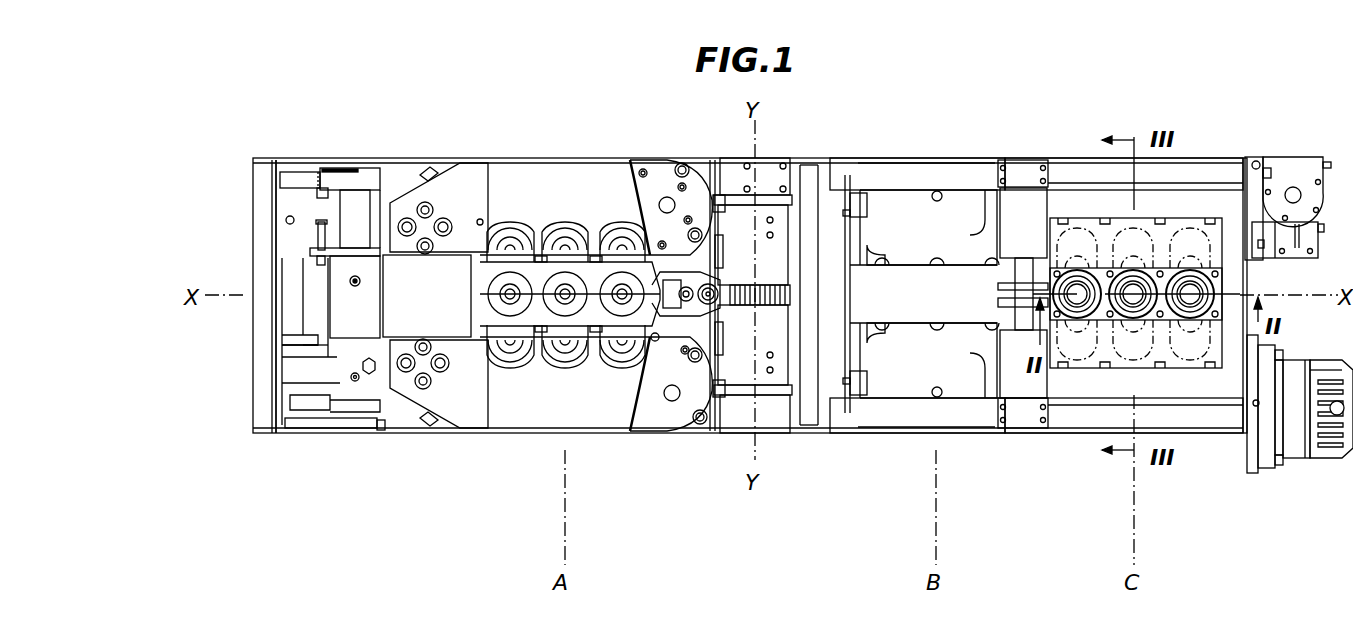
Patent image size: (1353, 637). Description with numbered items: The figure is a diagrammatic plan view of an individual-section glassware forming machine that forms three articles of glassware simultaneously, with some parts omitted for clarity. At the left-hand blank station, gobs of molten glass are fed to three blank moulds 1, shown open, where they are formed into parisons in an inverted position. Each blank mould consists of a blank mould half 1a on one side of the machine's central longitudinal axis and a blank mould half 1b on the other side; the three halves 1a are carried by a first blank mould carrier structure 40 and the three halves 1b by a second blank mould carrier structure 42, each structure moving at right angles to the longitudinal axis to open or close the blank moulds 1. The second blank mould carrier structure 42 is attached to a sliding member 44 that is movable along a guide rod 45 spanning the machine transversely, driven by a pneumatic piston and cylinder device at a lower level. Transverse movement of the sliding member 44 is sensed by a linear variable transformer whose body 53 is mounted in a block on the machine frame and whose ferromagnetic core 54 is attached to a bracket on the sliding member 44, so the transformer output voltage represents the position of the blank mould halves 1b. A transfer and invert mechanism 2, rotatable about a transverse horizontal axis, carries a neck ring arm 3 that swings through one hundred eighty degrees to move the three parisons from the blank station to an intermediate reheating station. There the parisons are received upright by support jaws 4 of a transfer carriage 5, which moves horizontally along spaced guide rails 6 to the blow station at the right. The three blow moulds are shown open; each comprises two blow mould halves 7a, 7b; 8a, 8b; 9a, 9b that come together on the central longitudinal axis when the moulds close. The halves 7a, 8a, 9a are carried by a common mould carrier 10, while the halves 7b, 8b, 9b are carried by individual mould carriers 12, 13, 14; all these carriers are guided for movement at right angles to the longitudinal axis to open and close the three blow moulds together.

The blank moulds 1 is at (578, 216).
The blank mould halves 1a is at (520, 235).
The blank mould halves 1b is at (508, 365).
The transfer and invert mechanism 2 is at (789, 266).
The neck ring arm 3 is at (560, 330).
The support jaws 4 is at (938, 364).
The transfer carriage 5 is at (958, 180).
The guide rails 6 is at (1070, 178).
The blow mould half 7a is at (1080, 240).
The blow mould half 7b is at (1075, 350).
The blow mould half 8a is at (1125, 240).
The blow mould half 8b is at (1140, 350).
The blow mould half 9a is at (1192, 240).
The blow mould half 9b is at (1200, 350).
The common mould carrier 10 is at (1138, 232).
The individual mould carrier 12 is at (1075, 415).
The individual mould carrier 13 is at (1130, 350).
The individual mould carrier 14 is at (1180, 405).
The first blank mould carrier structure 40 is at (466, 195).
The second blank mould carrier structure 42 is at (470, 410).
The sliding member 44 is at (370, 305).
The guide rod 45 is at (360, 178).
The body 53 is at (326, 180).
The core 54 is at (318, 235).